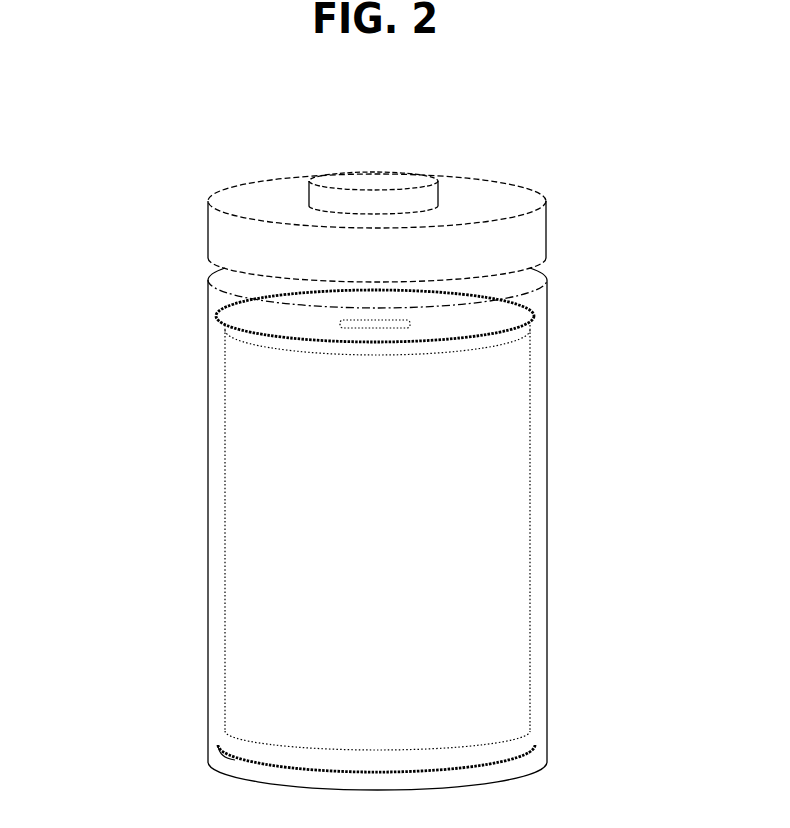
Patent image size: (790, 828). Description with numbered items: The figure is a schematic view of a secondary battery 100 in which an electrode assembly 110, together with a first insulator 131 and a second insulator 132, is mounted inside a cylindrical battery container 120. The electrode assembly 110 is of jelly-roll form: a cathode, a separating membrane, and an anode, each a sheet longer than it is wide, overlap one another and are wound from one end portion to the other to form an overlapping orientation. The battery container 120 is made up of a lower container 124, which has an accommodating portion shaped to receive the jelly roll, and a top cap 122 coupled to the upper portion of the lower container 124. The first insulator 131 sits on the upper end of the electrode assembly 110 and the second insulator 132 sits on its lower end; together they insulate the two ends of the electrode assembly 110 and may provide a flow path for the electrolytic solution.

The secondary battery 100 is at (85, 218).
The electrode assembly 110 is at (266, 538).
The battery container 120 is at (648, 273).
The top cap 122 is at (530, 245).
The lower container 124 is at (537, 373).
The first insulator 131 is at (226, 327).
The second insulator 132 is at (243, 749).